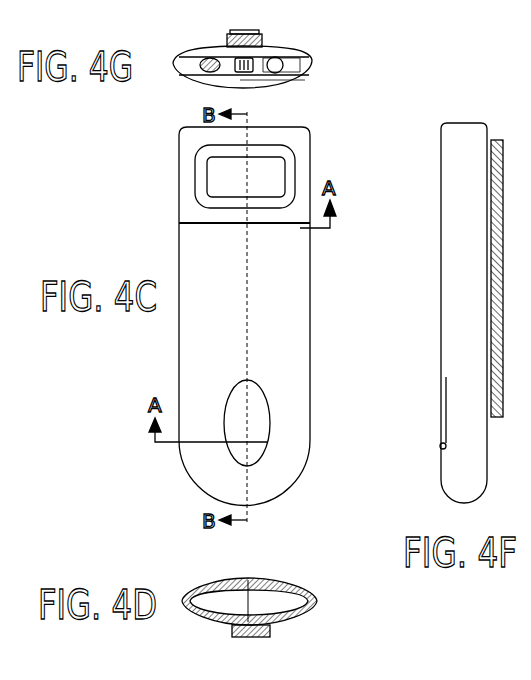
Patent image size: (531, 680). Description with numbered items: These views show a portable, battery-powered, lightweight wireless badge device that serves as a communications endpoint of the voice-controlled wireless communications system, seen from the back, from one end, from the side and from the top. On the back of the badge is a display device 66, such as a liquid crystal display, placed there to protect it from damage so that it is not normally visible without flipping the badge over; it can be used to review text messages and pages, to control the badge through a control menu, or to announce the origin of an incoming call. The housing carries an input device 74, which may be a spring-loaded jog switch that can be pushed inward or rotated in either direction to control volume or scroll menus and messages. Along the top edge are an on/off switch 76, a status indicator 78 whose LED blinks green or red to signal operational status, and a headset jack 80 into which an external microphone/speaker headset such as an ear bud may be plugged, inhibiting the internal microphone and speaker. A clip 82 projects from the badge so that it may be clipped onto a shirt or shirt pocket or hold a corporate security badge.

In FIG. 4C, the display device 66 is at (208, 172).
In FIG. 4C, the input device 74 is at (312, 160).
In FIG. 4G, the on/off switch 76 is at (203, 63).
In FIG. 4G, the status indicator 78 is at (280, 59).
In FIG. 4G, the headset jack 80 is at (298, 81).
In FIG. 4G, the clip / tab 82 is at (228, 36).
In FIG. 4F, the clip / tab 82 is at (497, 140).
In FIG. 4D, the clip / tab 82 is at (234, 632).